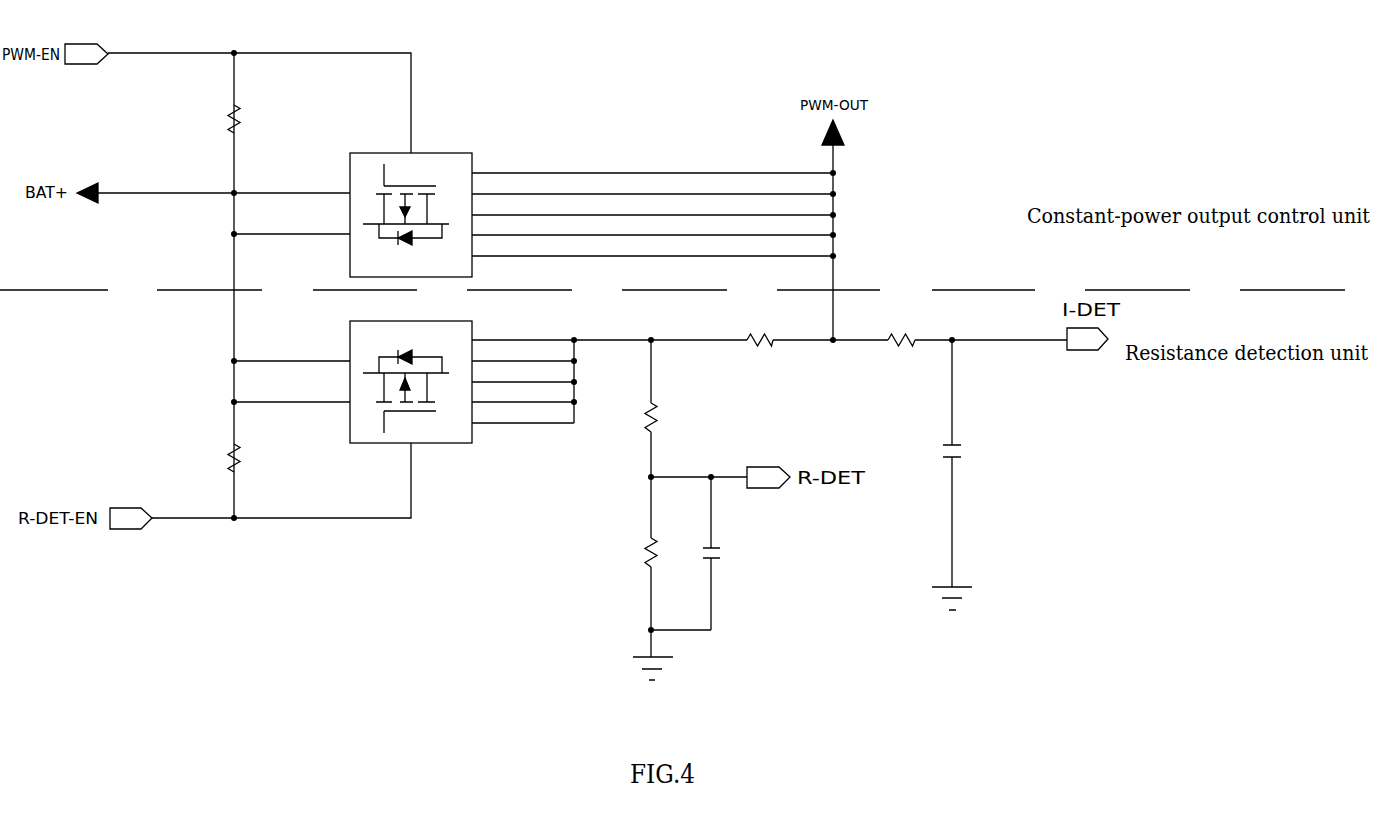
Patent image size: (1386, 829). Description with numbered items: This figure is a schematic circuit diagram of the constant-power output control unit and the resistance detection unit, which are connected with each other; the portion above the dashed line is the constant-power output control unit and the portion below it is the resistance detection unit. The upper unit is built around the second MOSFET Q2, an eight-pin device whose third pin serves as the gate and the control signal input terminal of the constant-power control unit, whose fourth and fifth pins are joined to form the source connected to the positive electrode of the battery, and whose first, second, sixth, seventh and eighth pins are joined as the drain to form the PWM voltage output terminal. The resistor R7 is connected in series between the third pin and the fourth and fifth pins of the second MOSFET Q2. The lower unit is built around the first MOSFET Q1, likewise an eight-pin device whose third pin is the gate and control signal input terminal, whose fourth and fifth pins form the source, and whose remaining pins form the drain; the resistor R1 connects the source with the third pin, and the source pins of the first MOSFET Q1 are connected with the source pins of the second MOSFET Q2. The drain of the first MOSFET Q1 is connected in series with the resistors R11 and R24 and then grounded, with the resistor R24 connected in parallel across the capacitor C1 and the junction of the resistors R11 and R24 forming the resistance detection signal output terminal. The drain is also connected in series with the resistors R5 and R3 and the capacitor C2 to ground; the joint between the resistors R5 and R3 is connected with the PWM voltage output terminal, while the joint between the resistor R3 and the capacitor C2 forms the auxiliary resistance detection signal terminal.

The resistor R7 is at (256, 119).
The resistor R1 is at (210, 458).
The second MOSFET Q2 is at (451, 146).
The first MOSFET Q1 is at (464, 470).
The resistor R5 is at (752, 325).
The resistor R3 is at (913, 327).
The resistor R11 is at (638, 408).
The resistor R24 is at (638, 553).
The capacitor C1 is at (699, 553).
The capacitor C2 is at (941, 463).